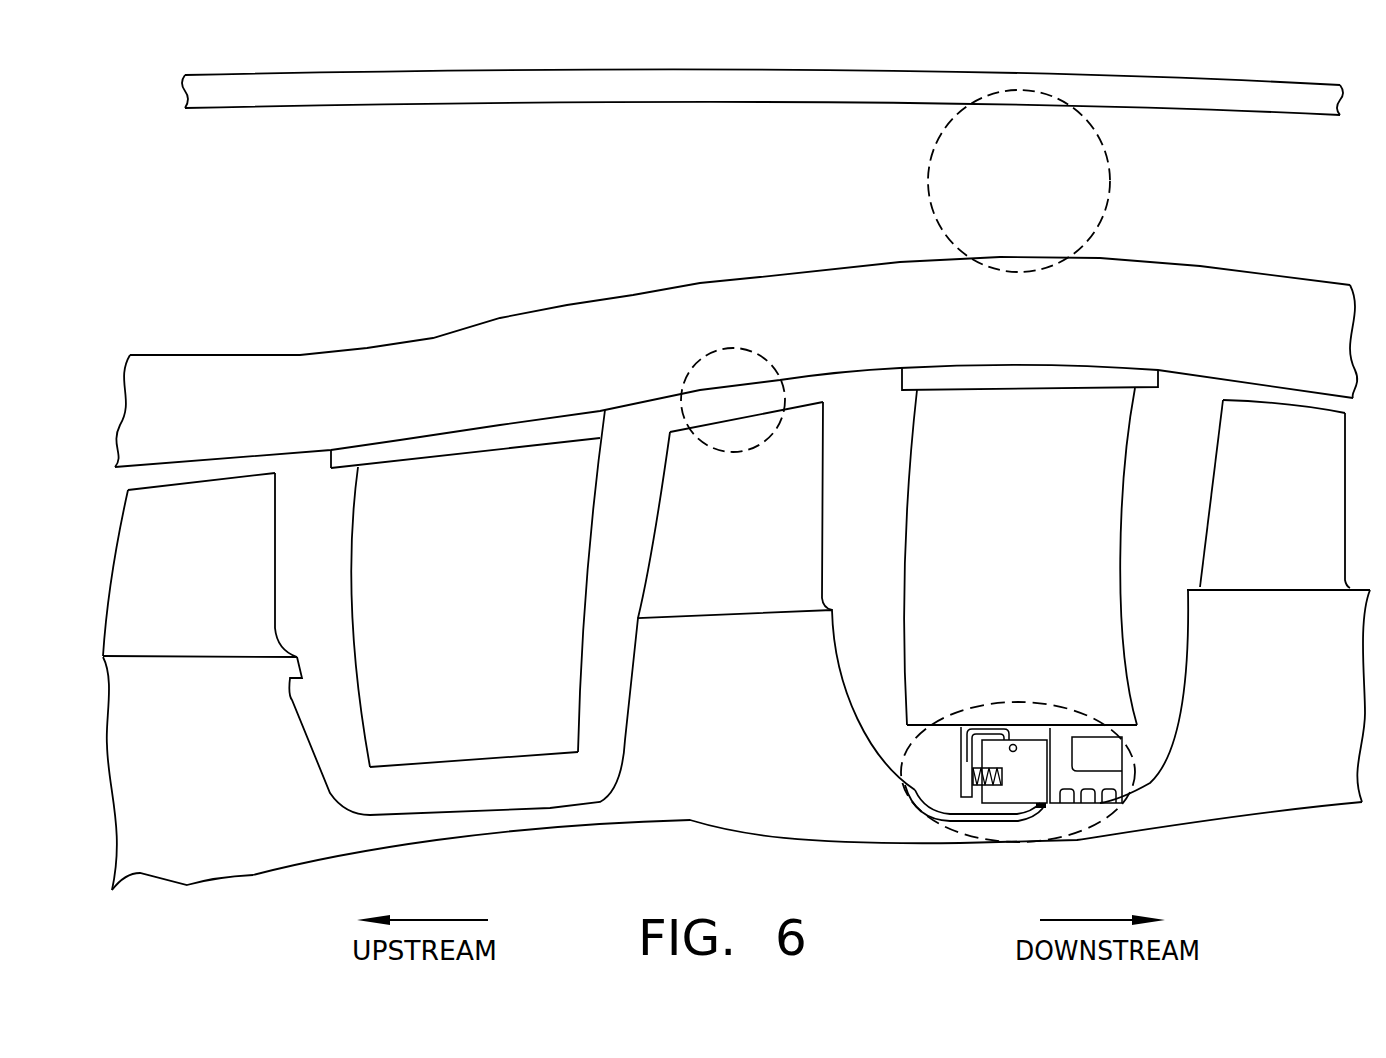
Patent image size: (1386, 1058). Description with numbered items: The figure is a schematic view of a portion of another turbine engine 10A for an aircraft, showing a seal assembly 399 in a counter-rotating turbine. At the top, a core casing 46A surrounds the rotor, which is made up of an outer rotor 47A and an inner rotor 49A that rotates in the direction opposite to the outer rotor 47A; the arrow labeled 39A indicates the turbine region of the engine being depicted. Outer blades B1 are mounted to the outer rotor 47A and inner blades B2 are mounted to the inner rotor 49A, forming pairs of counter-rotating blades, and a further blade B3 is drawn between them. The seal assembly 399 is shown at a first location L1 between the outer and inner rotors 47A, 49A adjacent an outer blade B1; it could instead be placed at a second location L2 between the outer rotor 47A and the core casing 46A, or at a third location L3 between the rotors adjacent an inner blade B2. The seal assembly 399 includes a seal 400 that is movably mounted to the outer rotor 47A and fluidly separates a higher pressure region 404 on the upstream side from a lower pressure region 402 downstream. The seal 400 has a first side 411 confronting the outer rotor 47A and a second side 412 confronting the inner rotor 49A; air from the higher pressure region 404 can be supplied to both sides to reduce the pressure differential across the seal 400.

The turbine engine 10A is at (152, 67).
The core casing 46A is at (355, 93).
The turbine section 39A is at (236, 242).
The outer rotor 47A is at (162, 417).
The inner rotor 49A is at (265, 827).
The first location L1 is at (988, 705).
The second location L2 is at (1110, 163).
The third location L3 is at (753, 350).
The outer blade B1 is at (497, 596).
The inner blade B2 is at (211, 585).
The third blade row B3 is at (752, 574).
The higher pressure region 404 is at (897, 646).
The lower pressure region 402 is at (1182, 642).
The seal 400 is at (1035, 786).
The first side 411 is at (974, 790).
The second side 412 is at (1040, 805).
The seal assembly 399 is at (997, 825).